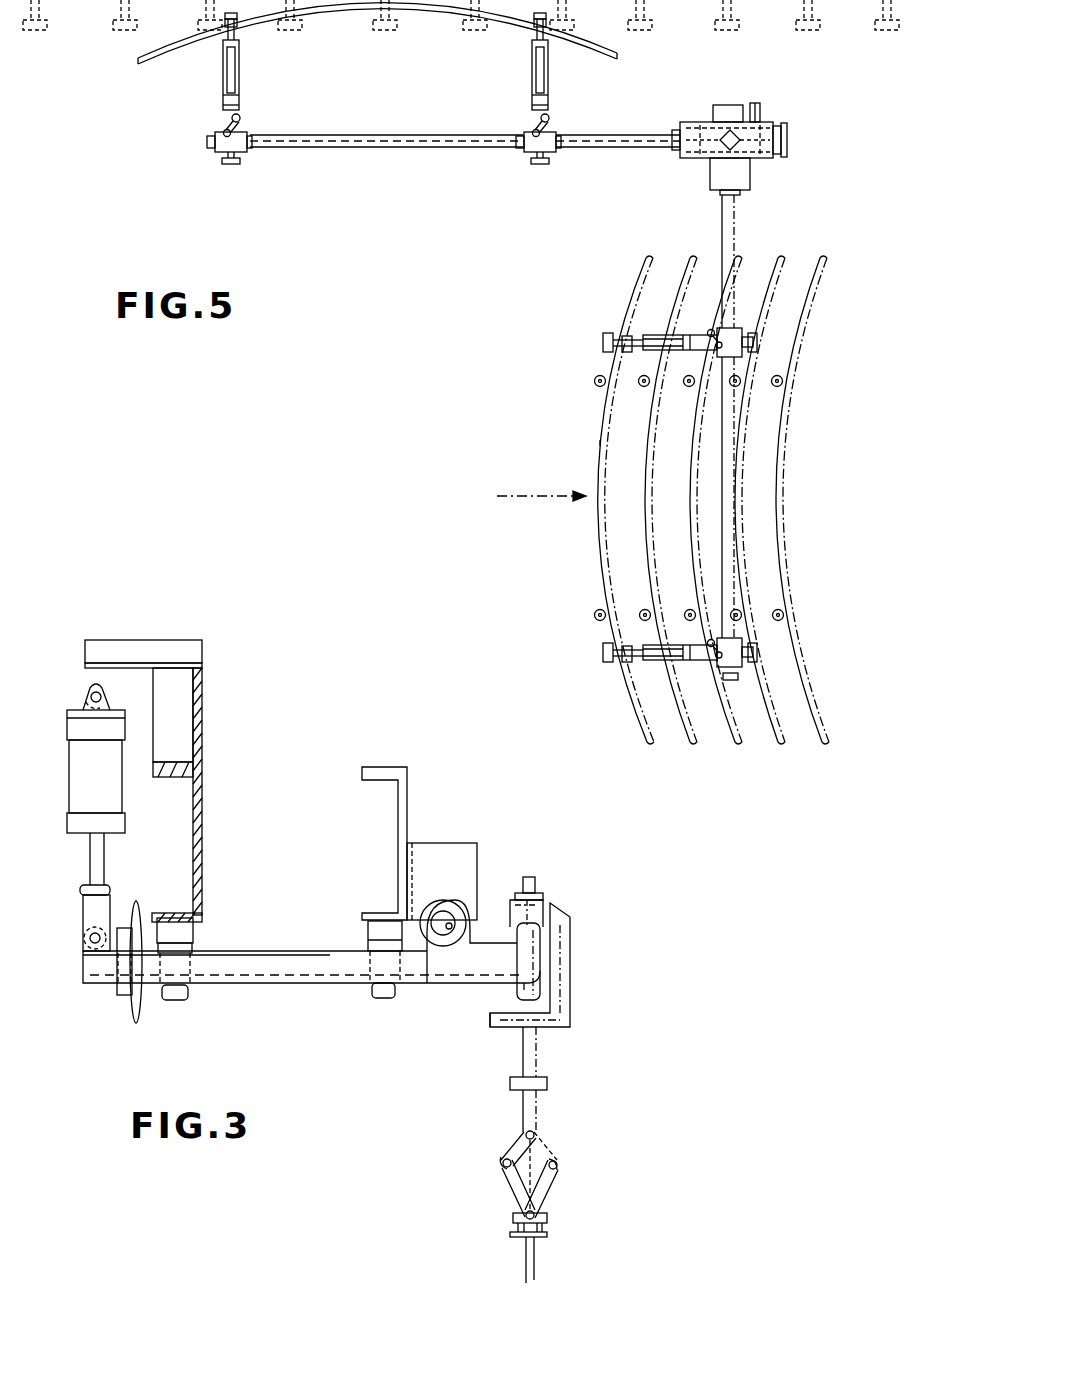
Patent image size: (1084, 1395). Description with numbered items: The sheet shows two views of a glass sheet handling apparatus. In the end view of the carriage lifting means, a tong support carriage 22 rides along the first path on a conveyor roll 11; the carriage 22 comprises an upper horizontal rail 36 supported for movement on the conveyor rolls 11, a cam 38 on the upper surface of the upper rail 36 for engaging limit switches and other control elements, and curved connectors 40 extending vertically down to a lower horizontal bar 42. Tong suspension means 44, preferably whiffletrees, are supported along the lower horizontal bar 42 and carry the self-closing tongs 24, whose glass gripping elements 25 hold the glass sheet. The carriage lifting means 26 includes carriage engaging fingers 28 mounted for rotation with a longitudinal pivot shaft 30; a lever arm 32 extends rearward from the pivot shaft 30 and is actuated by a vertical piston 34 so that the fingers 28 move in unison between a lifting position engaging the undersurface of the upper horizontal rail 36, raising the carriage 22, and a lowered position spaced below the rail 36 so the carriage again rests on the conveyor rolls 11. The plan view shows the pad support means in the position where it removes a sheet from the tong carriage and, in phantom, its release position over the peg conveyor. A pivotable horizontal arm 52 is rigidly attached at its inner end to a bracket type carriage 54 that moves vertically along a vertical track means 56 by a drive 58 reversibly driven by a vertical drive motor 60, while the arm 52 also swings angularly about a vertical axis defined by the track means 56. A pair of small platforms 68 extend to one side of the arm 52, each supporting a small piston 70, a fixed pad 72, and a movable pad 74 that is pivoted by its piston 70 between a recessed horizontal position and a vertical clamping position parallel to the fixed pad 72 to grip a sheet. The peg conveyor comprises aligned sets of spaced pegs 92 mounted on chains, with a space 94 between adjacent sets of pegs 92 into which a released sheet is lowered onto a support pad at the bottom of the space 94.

In FIG. 3, the conveyor roll 11 is at (527, 988).
In FIG. 3, the tong support carriage 22 is at (575, 953).
In FIG. 3, the self-closing tong 24 is at (556, 1187).
In FIG. 3, the glass gripping element 25 is at (510, 1235).
In FIG. 3, the carriage lifting means 26 is at (436, 970).
In FIG. 3, the carriage engaging finger 28 is at (545, 925).
In FIG. 3, the longitudinal pivot shaft 30 is at (440, 920).
In FIG. 3, the lever arm 32 is at (315, 983).
In FIG. 3, the vertical piston 34 is at (87, 917).
In FIG. 3, the upper horizontal rail 36 is at (544, 903).
In FIG. 3, the cam 38 is at (532, 877).
In FIG. 3, the curved connector 40 is at (572, 997).
In FIG. 3, the lower horizontal bar 42 is at (510, 1090).
In FIG. 3, the tong suspension means 44 is at (537, 1110).
In FIG. 5, the pivotable horizontal arm 52 is at (357, 137).
In FIG. 5, the bracket type carriage 54 is at (692, 160).
In FIG. 5, the vertical track means 56 is at (726, 105).
In FIG. 5, the drive 58 is at (760, 107).
In FIG. 5, the vertical drive motor 60 is at (750, 176).
In FIG. 5, the small platform 68 is at (239, 75).
In FIG. 5, the small piston 70 is at (228, 72).
In FIG. 5, the fixed pad 72 is at (240, 28).
In FIG. 5, the movable pad 74 is at (244, 12).
In FIG. 5, the peg 92 is at (642, 376).
In FIG. 5, the space 94 is at (641, 533).
In FIG. 5, the glass sheet G is at (642, 447).
In FIG. 3, the glass sheet G is at (536, 1270).